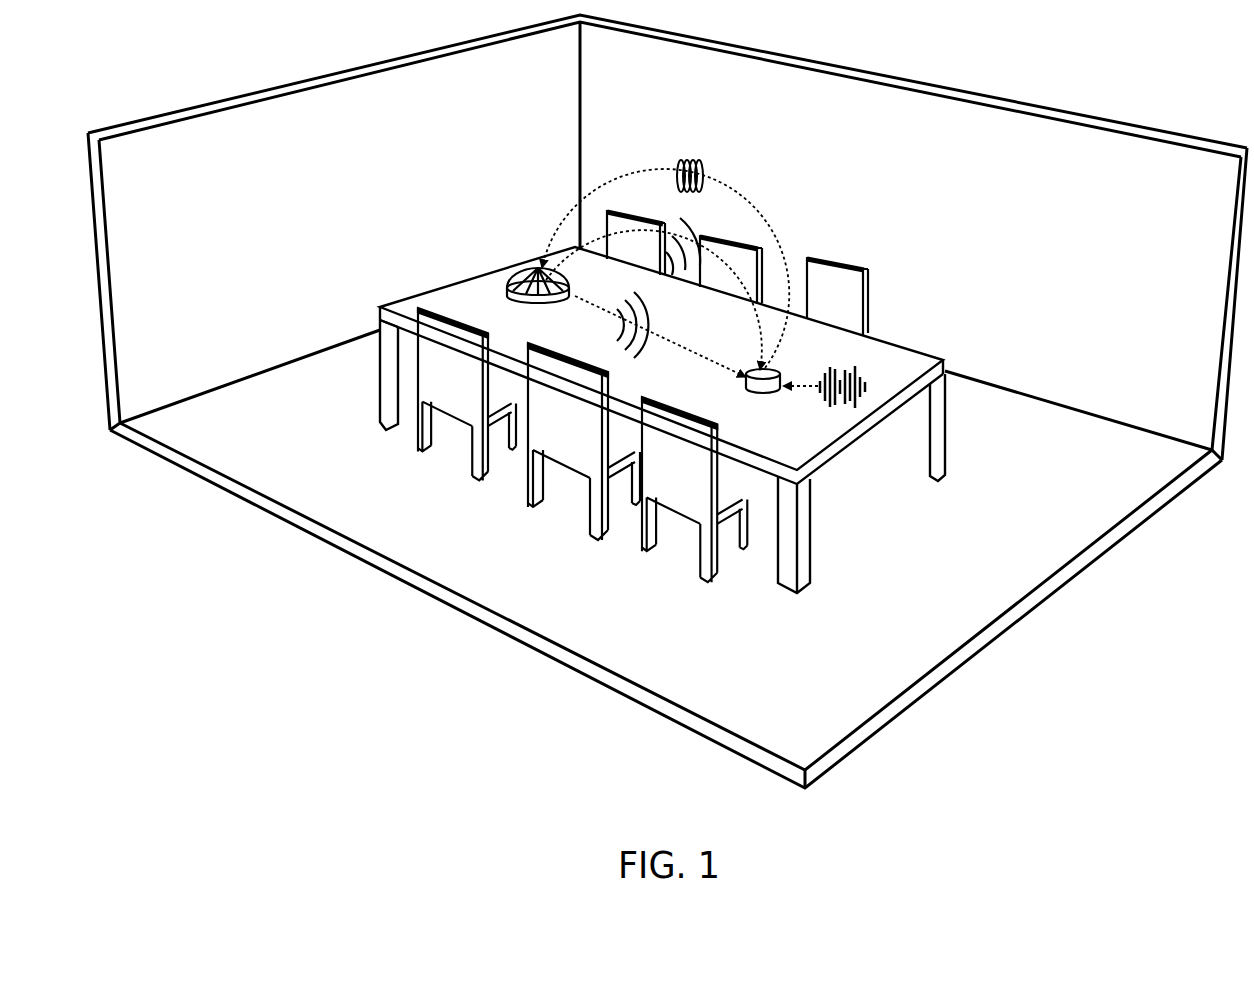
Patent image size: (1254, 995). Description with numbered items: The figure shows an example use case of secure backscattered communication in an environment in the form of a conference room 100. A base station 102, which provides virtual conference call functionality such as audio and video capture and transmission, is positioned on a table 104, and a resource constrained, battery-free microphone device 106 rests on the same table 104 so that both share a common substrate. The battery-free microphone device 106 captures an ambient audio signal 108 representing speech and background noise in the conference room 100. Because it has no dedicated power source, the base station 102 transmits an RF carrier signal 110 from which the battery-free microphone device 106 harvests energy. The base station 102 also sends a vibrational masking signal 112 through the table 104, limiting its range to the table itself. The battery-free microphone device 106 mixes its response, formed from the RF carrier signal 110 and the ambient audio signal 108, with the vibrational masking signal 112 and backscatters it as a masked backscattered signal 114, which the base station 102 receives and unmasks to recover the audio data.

The conference room 100 is at (409, 166).
The base station 102 is at (534, 298).
The table 104 is at (447, 305).
The battery-free microphone device 106 is at (746, 388).
The ambient audio signal 108 is at (859, 366).
The RF carrier signal 110 is at (706, 167).
The vibrational masking signal 112 is at (656, 316).
The masked backscattered signal 114 is at (711, 220).